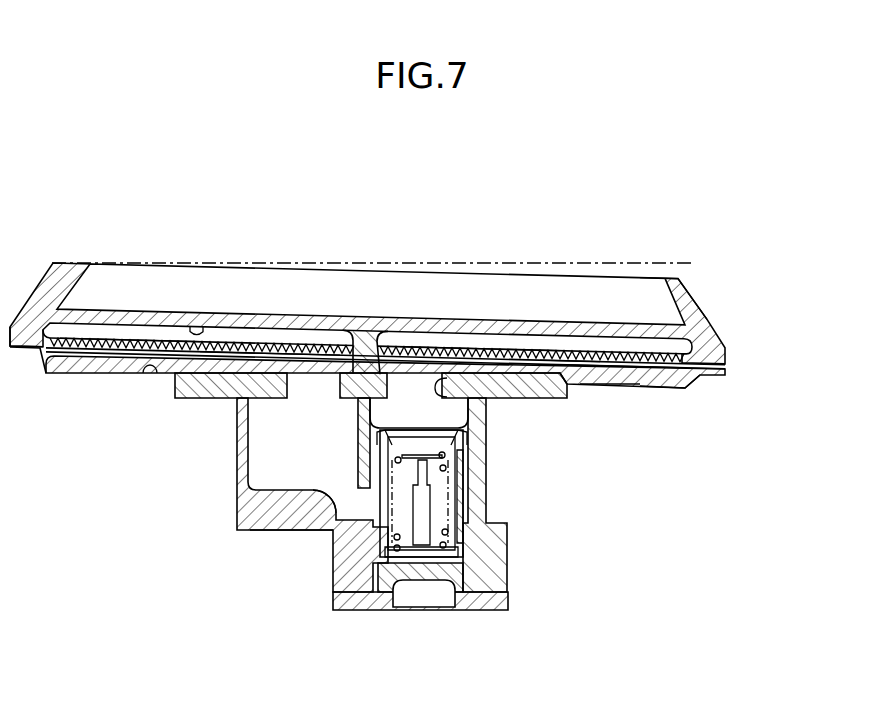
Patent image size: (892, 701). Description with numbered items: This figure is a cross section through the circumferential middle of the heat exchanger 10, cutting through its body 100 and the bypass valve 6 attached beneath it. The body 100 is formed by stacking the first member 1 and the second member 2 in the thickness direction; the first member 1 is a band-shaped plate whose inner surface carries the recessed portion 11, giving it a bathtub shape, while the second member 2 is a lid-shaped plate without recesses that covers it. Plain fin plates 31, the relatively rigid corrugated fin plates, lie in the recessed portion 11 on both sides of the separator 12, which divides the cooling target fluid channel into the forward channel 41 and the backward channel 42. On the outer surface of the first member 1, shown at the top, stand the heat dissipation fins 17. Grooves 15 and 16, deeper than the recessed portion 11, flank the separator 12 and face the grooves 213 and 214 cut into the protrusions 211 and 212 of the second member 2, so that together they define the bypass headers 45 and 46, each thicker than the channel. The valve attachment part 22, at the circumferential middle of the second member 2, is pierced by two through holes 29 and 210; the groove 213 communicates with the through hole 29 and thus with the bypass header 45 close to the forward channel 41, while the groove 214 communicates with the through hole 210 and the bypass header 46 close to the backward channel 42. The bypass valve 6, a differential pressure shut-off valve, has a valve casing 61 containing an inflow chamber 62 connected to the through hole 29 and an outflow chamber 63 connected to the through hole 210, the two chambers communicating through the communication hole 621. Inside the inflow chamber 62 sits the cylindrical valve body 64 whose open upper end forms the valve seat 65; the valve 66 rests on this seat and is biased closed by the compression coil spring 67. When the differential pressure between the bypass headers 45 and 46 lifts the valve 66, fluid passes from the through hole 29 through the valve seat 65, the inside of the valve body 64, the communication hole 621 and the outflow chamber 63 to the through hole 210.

The heat exchanger 10 is at (731, 186).
The body 100 is at (780, 312).
The first member 1 is at (722, 341).
The second member 2 is at (710, 384).
The recessed portion 11 is at (82, 337).
The separator 12 is at (377, 338).
The groove 15 is at (566, 340).
The groove 16 is at (196, 325).
The heat dissipation fins 17 is at (668, 283).
The plain fin plates 31 is at (300, 338).
The forward channel 41 is at (513, 352).
The backward channel 42 is at (137, 340).
The bypass header 45 is at (608, 345).
The bypass header 46 is at (245, 338).
The valve attachment part 22 is at (192, 400).
The through hole 29 is at (447, 412).
The through hole 210 is at (303, 405).
The protrusion 211 is at (652, 388).
The protrusion 212 is at (66, 375).
The groove 213 is at (611, 389).
The groove 214 is at (145, 374).
The bypass valve 6 is at (358, 611).
The valve casing 61 is at (509, 566).
The inflow chamber 62 is at (463, 476).
The outflow chamber 63 is at (272, 531).
The cylindrical valve body 64 is at (459, 501).
The valve seat 65 is at (397, 421).
The valve 66 is at (470, 448).
The compression coil spring 67 is at (466, 520).
The communication hole 621 is at (328, 531).